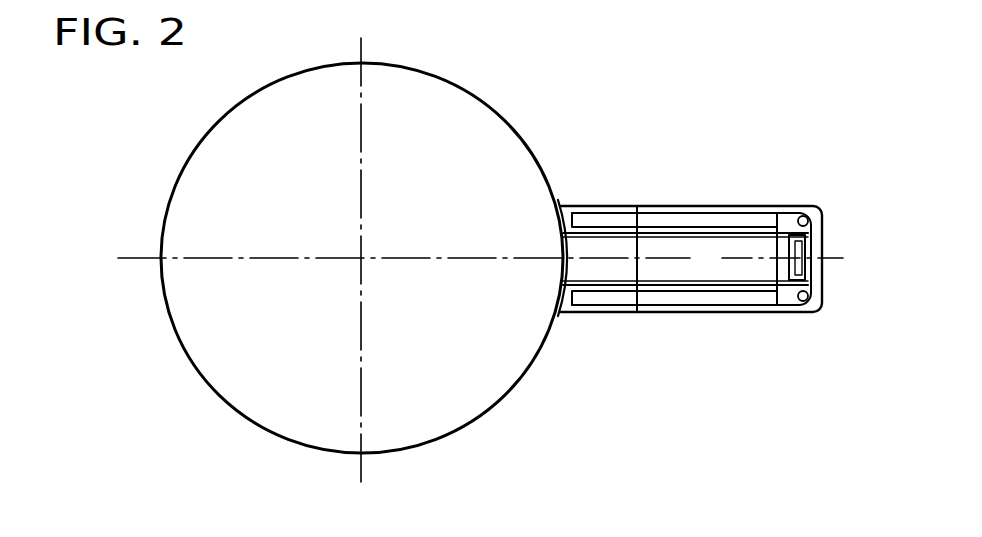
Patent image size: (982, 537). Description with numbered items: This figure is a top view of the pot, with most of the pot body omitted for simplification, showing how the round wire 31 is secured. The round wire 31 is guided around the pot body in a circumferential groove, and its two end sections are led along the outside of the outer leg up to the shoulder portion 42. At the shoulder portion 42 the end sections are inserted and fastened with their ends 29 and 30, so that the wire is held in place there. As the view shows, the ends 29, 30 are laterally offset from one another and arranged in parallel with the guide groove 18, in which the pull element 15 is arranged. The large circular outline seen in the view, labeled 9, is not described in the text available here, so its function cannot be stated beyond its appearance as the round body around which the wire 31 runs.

The drum / rotating body 9 is at (467, 118).
The pull element 15 is at (690, 258).
The guide groove 18 is at (811, 270).
The end of wire 29 is at (600, 212).
The end of wire 30 is at (597, 298).
The round wire 31 is at (753, 212).
The shoulder portion 42 is at (640, 243).